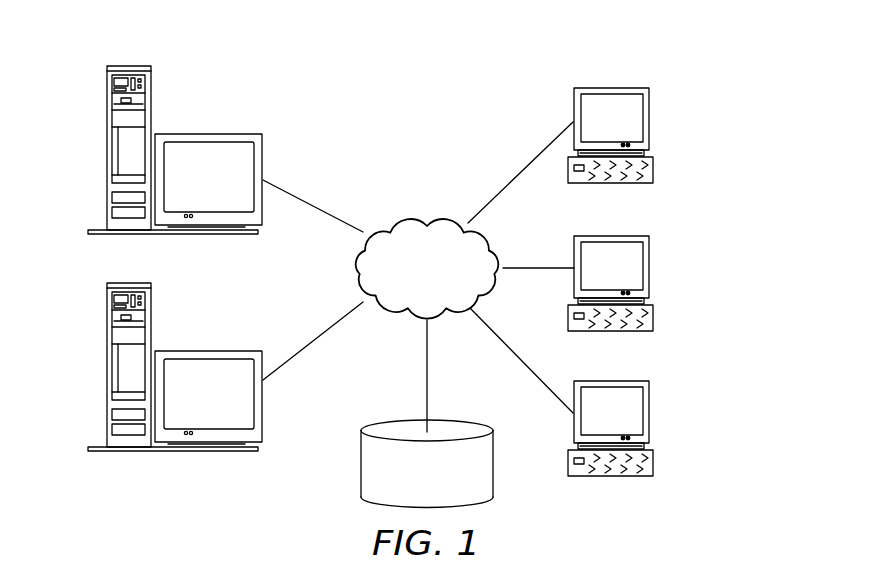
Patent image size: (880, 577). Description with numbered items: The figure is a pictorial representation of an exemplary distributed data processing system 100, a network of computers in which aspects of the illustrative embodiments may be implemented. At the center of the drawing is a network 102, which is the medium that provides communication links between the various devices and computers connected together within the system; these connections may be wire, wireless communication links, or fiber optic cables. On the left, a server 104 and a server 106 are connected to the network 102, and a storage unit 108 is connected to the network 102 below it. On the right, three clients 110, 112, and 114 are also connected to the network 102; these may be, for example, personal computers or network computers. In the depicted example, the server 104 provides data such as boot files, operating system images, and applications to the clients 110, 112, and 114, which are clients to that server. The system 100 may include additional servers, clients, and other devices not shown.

The distributed data processing system 100 is at (482, 75).
The network 102 is at (400, 215).
The server 104 is at (107, 150).
The server 106 is at (107, 370).
The storage unit 108 is at (360, 463).
The client 110 is at (649, 118).
The client 112 is at (649, 267).
The client 114 is at (649, 412).